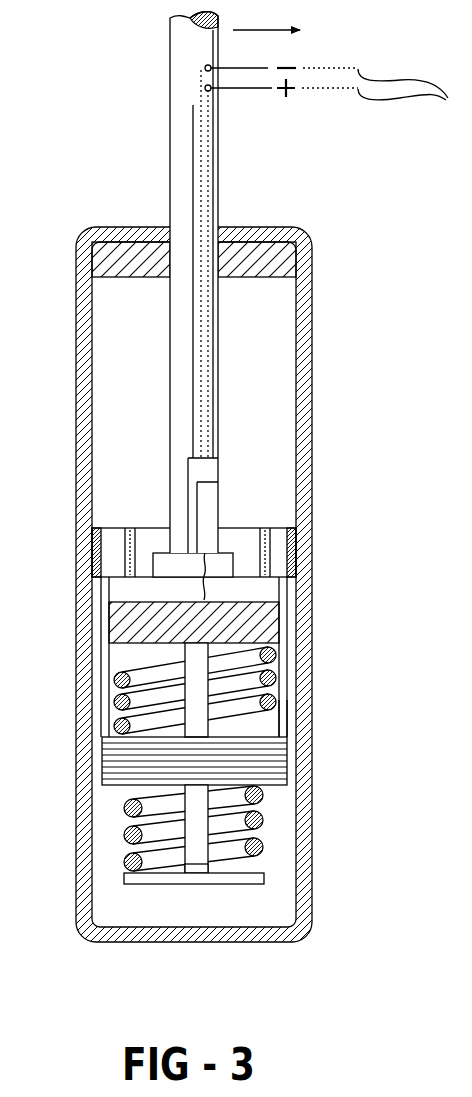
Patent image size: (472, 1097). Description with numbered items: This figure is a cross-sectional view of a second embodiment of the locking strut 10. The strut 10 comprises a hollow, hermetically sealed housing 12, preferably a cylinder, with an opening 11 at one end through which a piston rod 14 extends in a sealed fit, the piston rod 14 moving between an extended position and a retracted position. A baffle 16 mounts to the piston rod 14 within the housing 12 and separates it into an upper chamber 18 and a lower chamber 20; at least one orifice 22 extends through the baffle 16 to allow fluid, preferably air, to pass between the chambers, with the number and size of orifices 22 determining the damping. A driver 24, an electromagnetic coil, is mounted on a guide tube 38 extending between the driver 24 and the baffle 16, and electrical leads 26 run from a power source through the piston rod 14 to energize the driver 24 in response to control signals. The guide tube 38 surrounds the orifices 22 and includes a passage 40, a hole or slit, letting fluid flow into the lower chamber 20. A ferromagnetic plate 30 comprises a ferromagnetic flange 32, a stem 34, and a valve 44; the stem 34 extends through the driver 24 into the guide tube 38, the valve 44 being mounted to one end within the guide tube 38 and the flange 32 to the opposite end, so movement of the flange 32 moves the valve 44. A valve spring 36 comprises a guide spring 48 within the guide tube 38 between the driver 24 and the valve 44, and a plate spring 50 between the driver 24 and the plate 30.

The locking strut 10 is at (90, 140).
The opening 11 is at (200, 240).
The housing 12 is at (77, 468).
The piston rod 14 is at (180, 165).
The baffle 16 is at (297, 554).
The upper chamber 18 is at (126, 359).
The lower chamber 20 is at (111, 867).
The orifice 22 is at (265, 540).
The driver 24 is at (285, 757).
The electrical leads 26 is at (387, 90).
The ferromagnetic plate 30 is at (163, 889).
The ferromagnetic flange 32 is at (188, 878).
The stem 34 is at (200, 866).
The valve spring 36 is at (100, 712).
The guide tube 38 is at (283, 712).
The passage 40 is at (283, 590).
The valve 44 is at (112, 628).
The guide spring 48 is at (202, 690).
The plate spring 50 is at (200, 828).